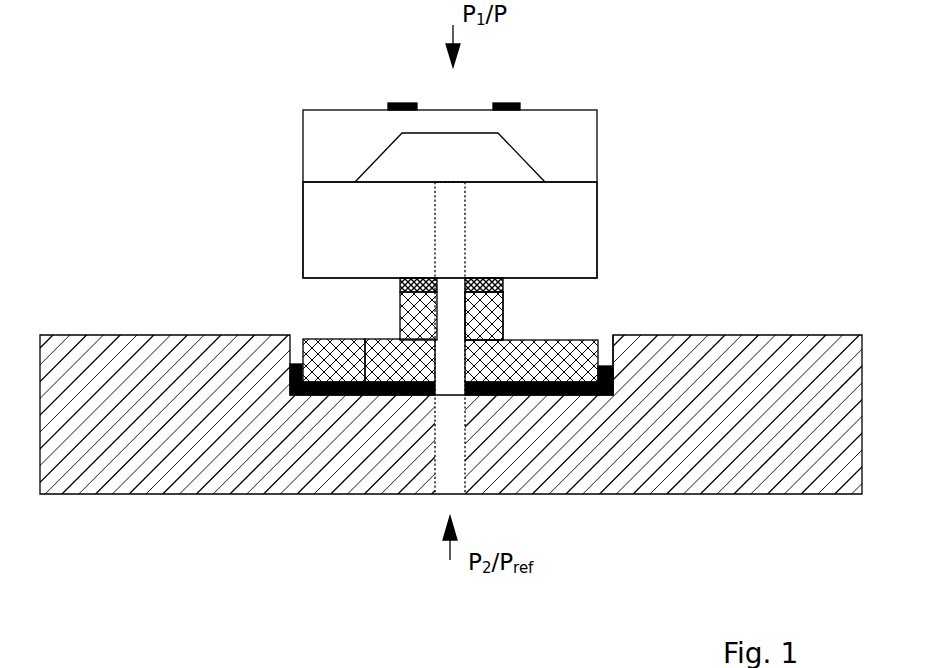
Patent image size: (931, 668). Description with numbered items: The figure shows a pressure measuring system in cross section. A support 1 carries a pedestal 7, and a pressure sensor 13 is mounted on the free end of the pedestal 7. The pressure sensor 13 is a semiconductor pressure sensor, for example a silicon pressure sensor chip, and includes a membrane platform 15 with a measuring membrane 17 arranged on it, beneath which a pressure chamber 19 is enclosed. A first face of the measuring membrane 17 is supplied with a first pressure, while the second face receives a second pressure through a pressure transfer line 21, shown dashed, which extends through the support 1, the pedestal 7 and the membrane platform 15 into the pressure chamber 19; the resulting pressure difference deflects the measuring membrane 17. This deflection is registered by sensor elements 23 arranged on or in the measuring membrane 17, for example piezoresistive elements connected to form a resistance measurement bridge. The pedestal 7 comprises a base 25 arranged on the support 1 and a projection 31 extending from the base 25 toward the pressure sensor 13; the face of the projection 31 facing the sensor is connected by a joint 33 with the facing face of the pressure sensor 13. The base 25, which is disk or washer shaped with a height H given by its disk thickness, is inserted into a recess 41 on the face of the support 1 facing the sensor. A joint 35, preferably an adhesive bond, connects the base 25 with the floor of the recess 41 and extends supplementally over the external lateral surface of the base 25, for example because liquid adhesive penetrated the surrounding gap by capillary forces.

The support 1 is at (790, 366).
The pedestal 7 is at (528, 328).
The pressure sensor 13 is at (284, 108).
The membrane platform 15 is at (570, 248).
The measuring membrane 17 is at (452, 121).
The pressure chamber 19 is at (462, 172).
The pressure transfer line 21 is at (450, 231).
The sensor elements 23 is at (511, 103).
The base 25 is at (312, 362).
The projection 31 is at (480, 300).
The joint 33 is at (400, 292).
The joint 35 is at (367, 393).
The recess 41 is at (610, 345).
The height H is at (332, 362).